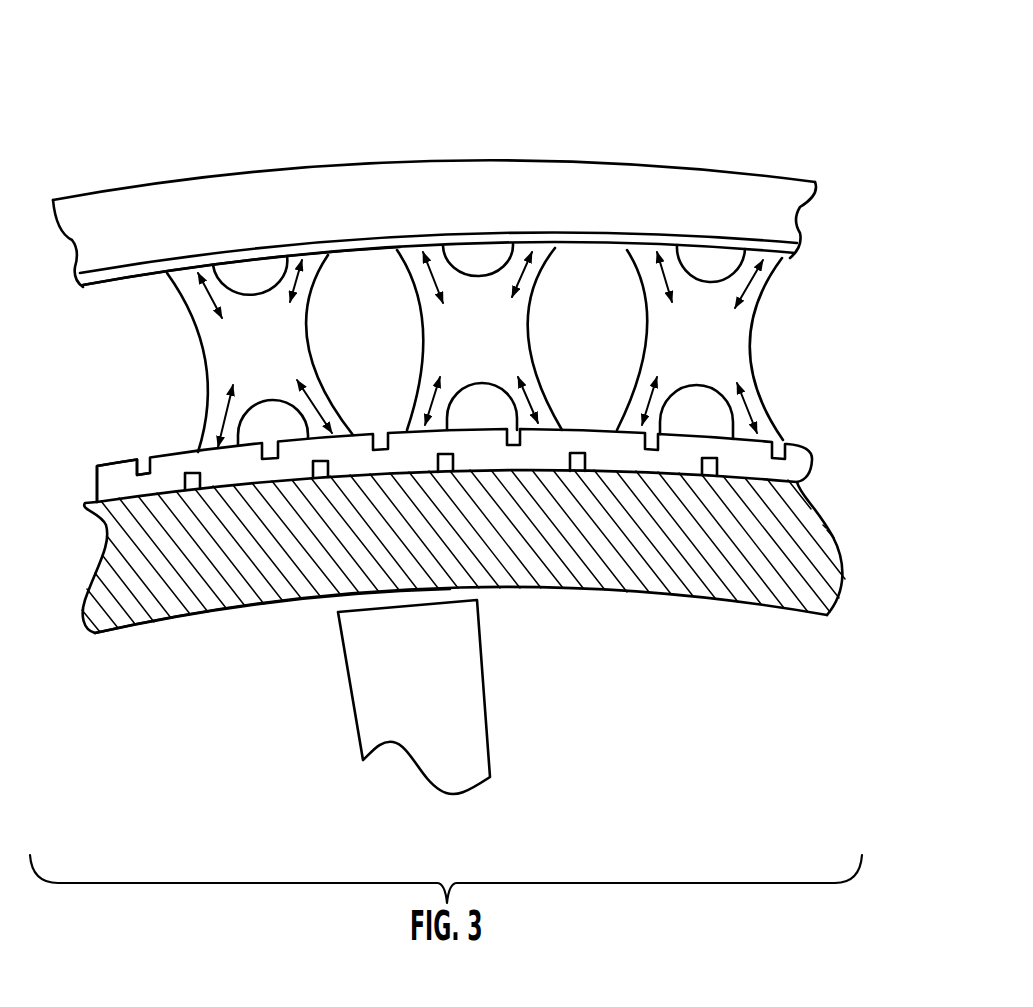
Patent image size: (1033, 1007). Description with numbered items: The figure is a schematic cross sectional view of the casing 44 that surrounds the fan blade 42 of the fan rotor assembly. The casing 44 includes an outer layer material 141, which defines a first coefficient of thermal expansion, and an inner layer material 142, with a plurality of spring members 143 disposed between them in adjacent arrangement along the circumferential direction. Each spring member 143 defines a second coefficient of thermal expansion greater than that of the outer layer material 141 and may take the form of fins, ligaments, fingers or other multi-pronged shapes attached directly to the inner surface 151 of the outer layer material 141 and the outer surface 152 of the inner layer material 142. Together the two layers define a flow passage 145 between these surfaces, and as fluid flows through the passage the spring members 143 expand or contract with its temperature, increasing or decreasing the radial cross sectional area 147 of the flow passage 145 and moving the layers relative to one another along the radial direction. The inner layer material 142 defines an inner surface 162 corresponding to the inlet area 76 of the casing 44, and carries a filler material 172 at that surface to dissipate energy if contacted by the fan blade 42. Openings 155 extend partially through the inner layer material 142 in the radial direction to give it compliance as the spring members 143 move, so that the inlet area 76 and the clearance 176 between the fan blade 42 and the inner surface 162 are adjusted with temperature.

The casing 44 is at (388, 133).
The outer layer material 141 is at (733, 200).
The inner layer material 142 is at (513, 538).
The spring member 143 is at (203, 358).
The flow passage 145 is at (382, 347).
The radial cross sectional area 147 is at (590, 428).
The inner surface 151 is at (138, 286).
The outer surface 152 is at (113, 458).
The openings 155 is at (126, 473).
The inner surface 162 is at (157, 626).
The filler material 172 is at (803, 567).
The clearance 176 is at (403, 645).
The fan blade 42 is at (473, 740).
The inlet area 76 is at (285, 604).